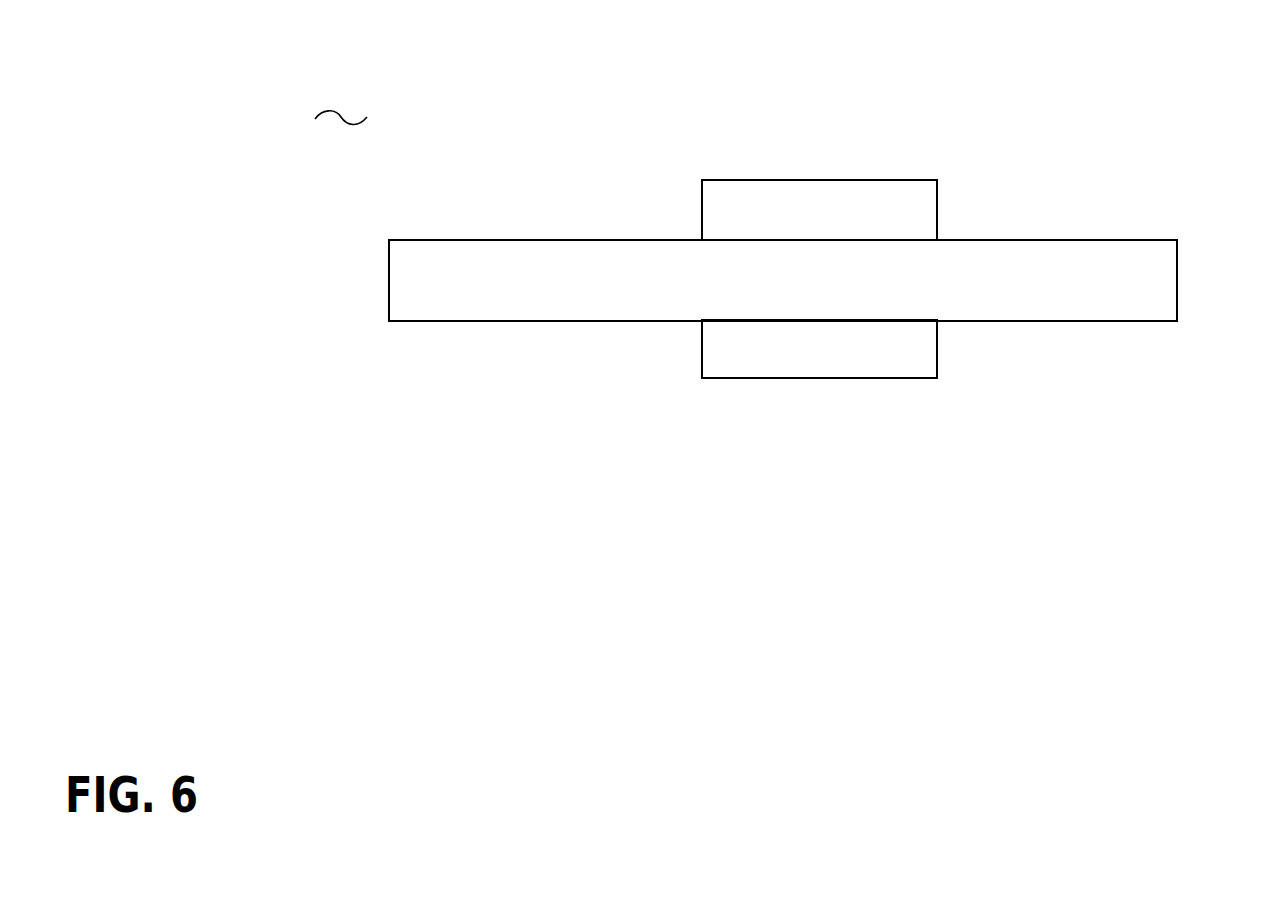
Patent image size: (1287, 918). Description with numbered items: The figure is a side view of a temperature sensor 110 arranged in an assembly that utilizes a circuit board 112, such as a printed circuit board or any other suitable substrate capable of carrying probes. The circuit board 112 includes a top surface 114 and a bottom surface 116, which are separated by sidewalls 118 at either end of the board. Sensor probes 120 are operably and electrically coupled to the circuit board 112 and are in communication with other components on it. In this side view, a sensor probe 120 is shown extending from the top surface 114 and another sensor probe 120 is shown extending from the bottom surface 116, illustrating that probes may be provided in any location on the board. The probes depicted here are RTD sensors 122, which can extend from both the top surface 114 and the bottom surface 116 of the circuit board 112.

The temperature sensor 110 is at (341, 102).
The circuit board 112 is at (1040, 275).
The top surface 114 is at (980, 240).
The bottom surface 116 is at (983, 320).
The sidewalls 118 is at (388, 282).
The sensor probes 120 is at (747, 178).
The RTD sensors 122 is at (830, 210).